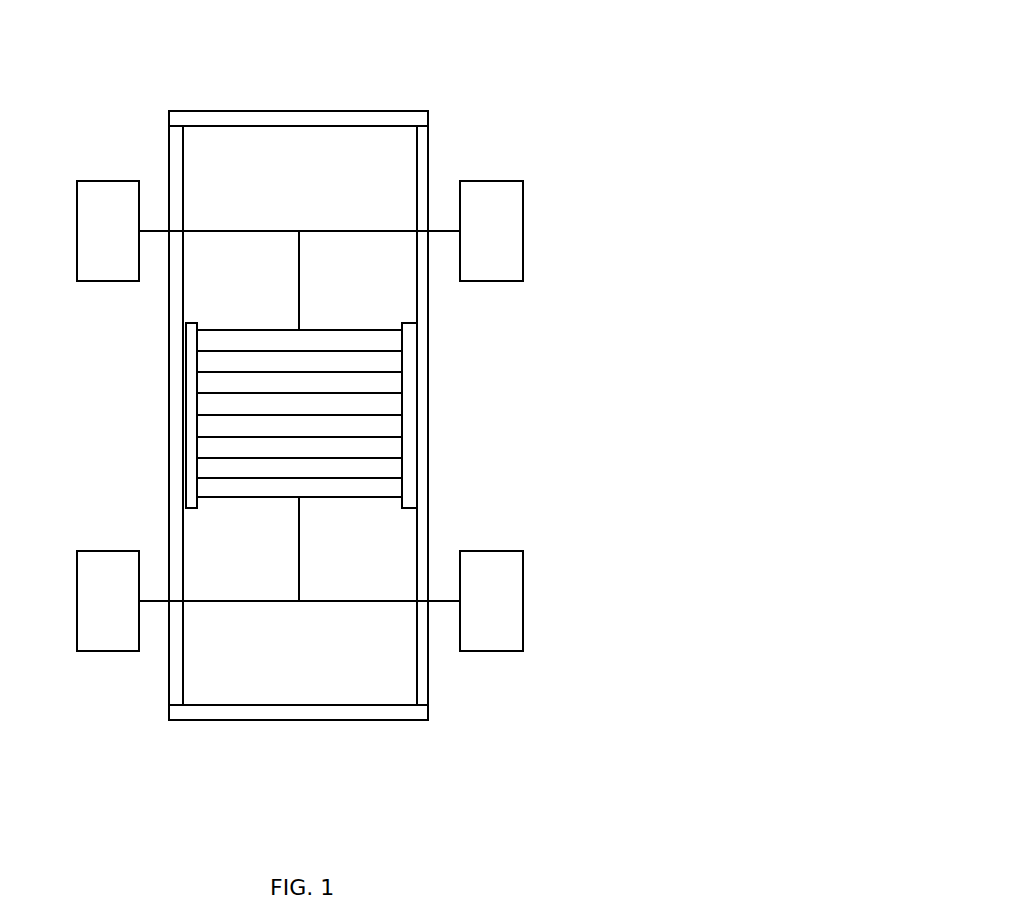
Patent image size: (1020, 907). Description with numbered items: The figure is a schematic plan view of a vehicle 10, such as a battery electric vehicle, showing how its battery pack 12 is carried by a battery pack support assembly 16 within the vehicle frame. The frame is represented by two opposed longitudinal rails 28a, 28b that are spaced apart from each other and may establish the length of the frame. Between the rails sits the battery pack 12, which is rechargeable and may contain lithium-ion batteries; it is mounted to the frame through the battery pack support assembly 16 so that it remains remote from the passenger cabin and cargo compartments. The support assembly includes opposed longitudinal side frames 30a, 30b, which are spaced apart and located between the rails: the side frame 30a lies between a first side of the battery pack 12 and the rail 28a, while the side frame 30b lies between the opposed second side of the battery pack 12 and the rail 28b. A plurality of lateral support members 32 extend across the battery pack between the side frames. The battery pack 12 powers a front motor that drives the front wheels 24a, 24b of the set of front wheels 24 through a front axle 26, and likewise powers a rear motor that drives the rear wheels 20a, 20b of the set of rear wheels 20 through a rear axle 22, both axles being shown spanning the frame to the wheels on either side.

The vehicle 10 is at (612, 80).
The battery pack 12 is at (338, 330).
The battery pack support assembly 16 is at (203, 300).
The set of rear wheels 20 is at (545, 592).
The rear wheel 20a is at (110, 551).
The rear wheel 20b is at (495, 551).
The rear axle 22 is at (338, 602).
The set of front wheels 24 is at (545, 222).
The front wheel 24a is at (110, 181).
The front wheel 24b is at (495, 181).
The front axle 26 is at (339, 231).
The longitudinal rail 28a is at (422, 291).
The longitudinal rail 28b is at (176, 289).
The longitudinal side frame 30a is at (410, 342).
The longitudinal side frame 30b is at (187, 341).
The lateral support members 32 is at (402, 351).